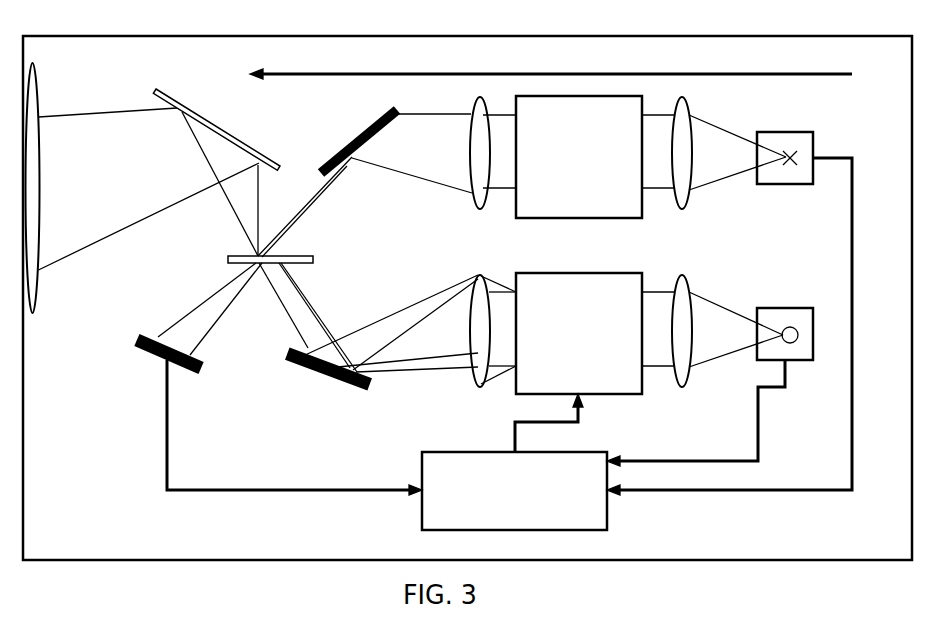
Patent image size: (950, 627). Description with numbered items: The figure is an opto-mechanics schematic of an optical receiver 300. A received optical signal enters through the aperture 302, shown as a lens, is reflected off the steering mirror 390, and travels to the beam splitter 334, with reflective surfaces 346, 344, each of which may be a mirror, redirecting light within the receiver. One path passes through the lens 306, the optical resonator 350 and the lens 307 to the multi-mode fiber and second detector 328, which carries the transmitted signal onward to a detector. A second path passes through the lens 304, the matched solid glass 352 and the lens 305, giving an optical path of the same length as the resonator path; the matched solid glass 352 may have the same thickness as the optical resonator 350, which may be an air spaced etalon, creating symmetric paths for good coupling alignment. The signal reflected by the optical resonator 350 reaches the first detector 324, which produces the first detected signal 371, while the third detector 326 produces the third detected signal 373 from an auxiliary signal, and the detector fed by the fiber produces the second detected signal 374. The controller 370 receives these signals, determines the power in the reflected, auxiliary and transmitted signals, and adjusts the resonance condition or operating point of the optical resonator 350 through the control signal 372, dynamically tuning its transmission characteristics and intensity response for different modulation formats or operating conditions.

The optical receiver 300 is at (143, 35).
The aperture 302 is at (38, 80).
The lens 304 is at (478, 208).
The lens 305 is at (686, 206).
The lens 306 is at (480, 384).
The lens 307 is at (688, 378).
The first detector 324 is at (133, 343).
The third detector 326 is at (801, 185).
The multi-mode fiber and second detector 328 is at (801, 361).
The beam splitter 334 is at (308, 255).
The reflective surface 344 is at (288, 357).
The reflective surface 346 is at (396, 106).
The optical resonator 350 is at (579, 333).
The matched solid glass 352 is at (579, 157).
The controller 370 is at (514, 491).
The first detected signal 371 is at (294, 427).
The control signal 372 is at (564, 423).
The third detected signal 373 is at (750, 323).
The second detected signal 374 is at (696, 413).
The steering mirror 390 is at (180, 105).